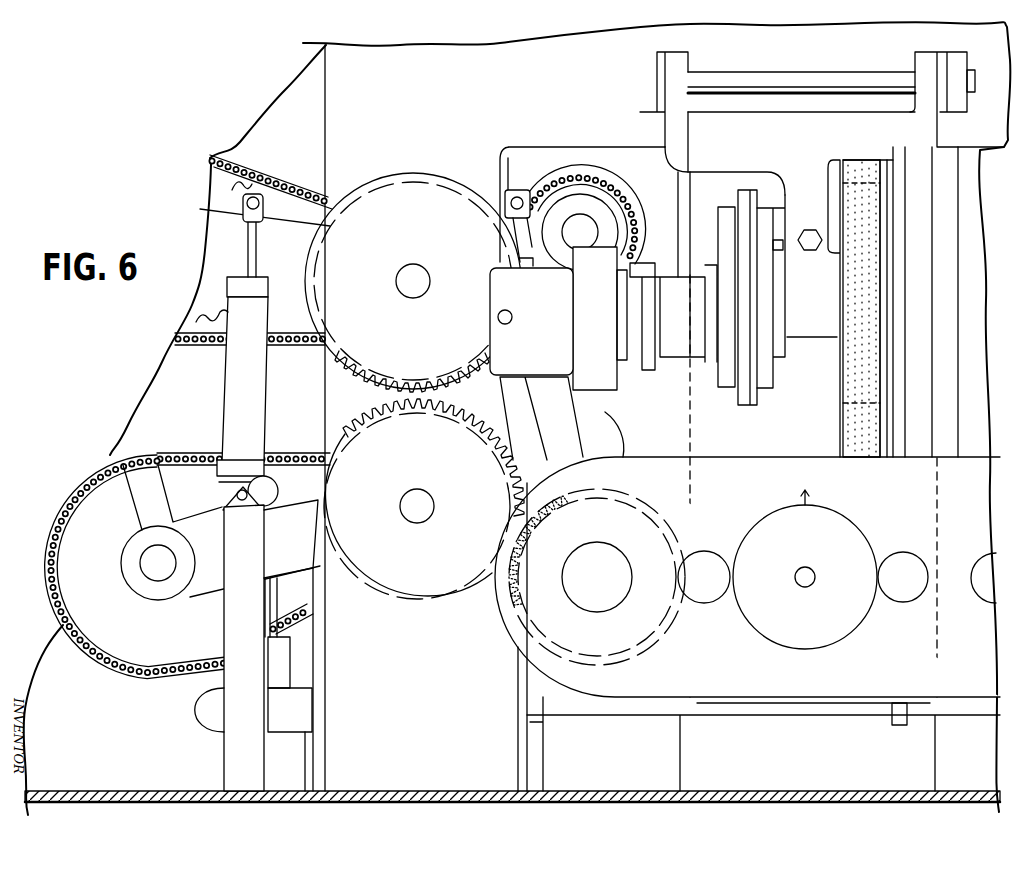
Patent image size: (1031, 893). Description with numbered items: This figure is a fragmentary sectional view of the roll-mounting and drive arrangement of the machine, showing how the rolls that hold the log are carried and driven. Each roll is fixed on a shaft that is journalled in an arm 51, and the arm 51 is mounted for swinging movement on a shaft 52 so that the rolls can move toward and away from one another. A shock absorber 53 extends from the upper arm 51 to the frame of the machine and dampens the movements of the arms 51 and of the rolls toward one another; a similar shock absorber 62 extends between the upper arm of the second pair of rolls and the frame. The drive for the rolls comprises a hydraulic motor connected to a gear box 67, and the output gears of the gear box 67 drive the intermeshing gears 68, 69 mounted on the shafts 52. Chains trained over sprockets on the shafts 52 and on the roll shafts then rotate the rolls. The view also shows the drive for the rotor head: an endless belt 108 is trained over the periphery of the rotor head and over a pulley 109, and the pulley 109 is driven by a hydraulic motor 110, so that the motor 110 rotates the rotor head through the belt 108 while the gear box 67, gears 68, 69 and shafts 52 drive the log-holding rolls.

The arm 51 is at (267, 219).
The shaft 52 is at (424, 500).
The shock absorber 53 is at (232, 407).
The shock absorber 62 is at (578, 398).
The gear box 67 is at (618, 690).
The gear 68 is at (375, 197).
The gear 69 is at (418, 600).
The endless belt 108 is at (850, 458).
The pulley 109 is at (838, 374).
The hydraulic motor 110 is at (500, 300).